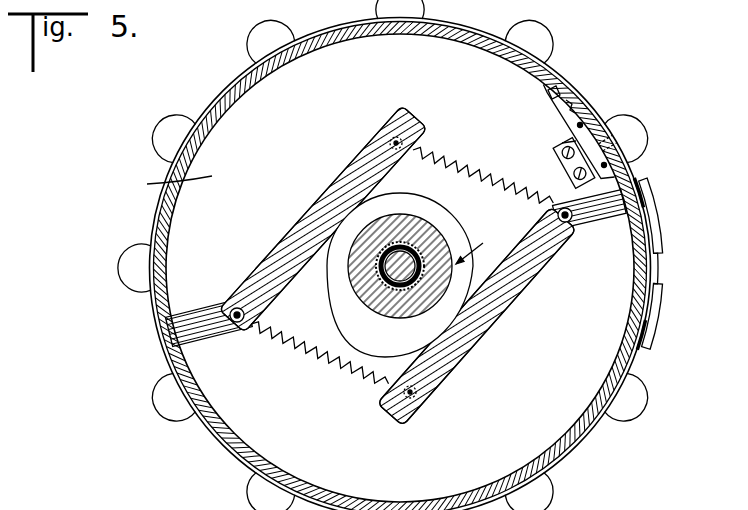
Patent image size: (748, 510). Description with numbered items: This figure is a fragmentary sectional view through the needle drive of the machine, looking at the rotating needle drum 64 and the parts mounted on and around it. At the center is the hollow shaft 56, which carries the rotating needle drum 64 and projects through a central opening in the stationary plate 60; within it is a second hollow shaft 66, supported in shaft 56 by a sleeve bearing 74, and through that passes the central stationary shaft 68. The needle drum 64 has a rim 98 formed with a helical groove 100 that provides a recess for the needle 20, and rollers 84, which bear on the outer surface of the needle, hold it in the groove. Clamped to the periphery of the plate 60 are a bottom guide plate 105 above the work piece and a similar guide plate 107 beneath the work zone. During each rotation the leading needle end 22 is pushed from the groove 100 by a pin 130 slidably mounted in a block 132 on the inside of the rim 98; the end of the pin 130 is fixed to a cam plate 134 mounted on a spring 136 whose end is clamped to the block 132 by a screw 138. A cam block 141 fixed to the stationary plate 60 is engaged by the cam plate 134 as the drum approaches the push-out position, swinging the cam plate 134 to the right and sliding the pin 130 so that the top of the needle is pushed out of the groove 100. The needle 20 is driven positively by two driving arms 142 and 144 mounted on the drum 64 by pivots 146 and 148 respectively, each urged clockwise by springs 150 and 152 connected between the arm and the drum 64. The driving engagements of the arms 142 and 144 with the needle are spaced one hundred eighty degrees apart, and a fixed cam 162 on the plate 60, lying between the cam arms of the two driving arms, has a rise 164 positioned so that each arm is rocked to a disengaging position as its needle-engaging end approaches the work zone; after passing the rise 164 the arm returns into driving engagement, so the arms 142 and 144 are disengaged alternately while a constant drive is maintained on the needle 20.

The needle 20 is at (223, 438).
The leading needle end 22 is at (638, 165).
The hollow shaft 56 is at (368, 258).
The stationary plate 60 is at (162, 187).
The rotating needle drum 64 is at (482, 245).
The hollow shaft 66 is at (400, 256).
The central stationary shaft 68 is at (394, 272).
The sleeve bearing 74 is at (412, 262).
The rollers 84 is at (252, 53).
The rim 98 is at (456, 40).
The helical groove 100 is at (240, 446).
The bottom guide plate 105 is at (659, 232).
The guide plate 107 is at (659, 318).
The pin 130 is at (612, 142).
The block 132 is at (568, 110).
The cam plate 134 is at (563, 142).
The spring 136 is at (564, 106).
The screw 138 is at (548, 94).
The cam block 141 is at (553, 158).
The driving arm 142 is at (508, 282).
The driving arm 144 is at (285, 262).
The pivot 146 is at (567, 225).
The pivot 148 is at (237, 308).
The spring 150 is at (354, 374).
The spring 152 is at (468, 166).
The fixed cam 162 is at (423, 208).
The rise 164 is at (360, 347).